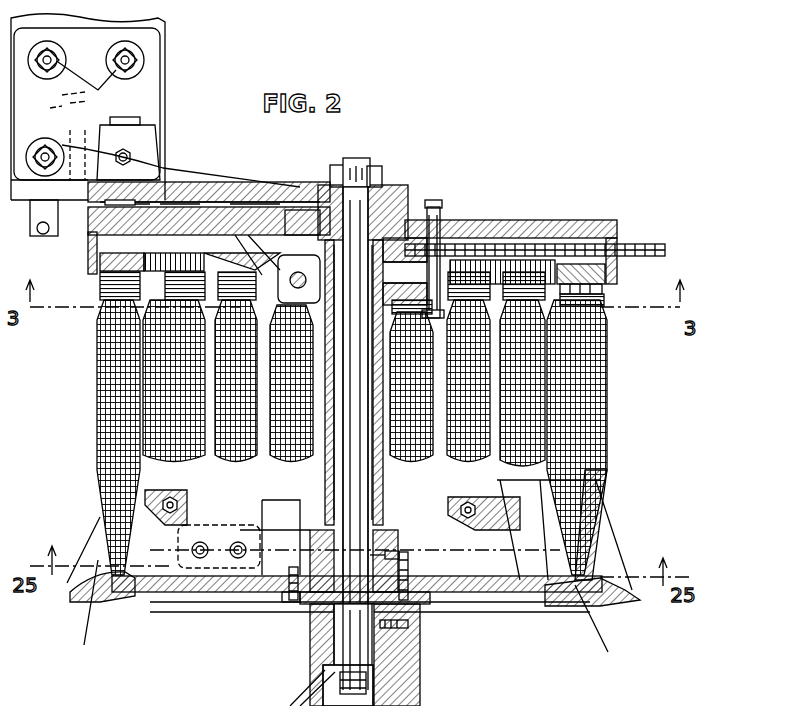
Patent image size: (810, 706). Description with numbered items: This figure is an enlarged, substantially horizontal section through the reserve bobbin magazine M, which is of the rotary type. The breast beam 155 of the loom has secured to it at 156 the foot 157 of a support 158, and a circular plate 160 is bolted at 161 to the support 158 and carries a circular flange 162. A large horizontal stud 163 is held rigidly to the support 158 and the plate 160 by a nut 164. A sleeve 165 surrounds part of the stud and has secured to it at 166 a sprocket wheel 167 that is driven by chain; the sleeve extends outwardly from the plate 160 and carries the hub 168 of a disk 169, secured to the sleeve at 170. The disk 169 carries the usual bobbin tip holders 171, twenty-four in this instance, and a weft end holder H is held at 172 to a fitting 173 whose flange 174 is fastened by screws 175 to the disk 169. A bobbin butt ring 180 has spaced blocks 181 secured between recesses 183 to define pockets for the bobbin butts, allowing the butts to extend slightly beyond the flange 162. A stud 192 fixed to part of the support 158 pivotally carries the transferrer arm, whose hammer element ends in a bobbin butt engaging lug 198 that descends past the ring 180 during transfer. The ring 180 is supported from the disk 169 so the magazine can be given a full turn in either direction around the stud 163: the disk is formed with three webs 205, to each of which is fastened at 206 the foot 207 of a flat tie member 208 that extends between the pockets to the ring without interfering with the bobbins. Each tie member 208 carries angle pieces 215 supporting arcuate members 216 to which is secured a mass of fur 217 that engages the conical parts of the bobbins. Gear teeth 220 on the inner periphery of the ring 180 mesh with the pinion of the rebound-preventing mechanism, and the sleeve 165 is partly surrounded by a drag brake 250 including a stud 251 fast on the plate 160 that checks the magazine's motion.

The breast beam 155 is at (150, 25).
The securing point of foot 156 is at (47, 152).
The foot 157 is at (155, 66).
The support 158 is at (232, 190).
The circular plate 160 is at (306, 208).
The bolting point of plate 161 is at (166, 200).
The circular flange 162 is at (88, 262).
The horizontal stud 163 is at (352, 218).
The nut 164 is at (378, 170).
The sleeve 165 is at (383, 475).
The securing point of sprocket wheel 166 is at (400, 240).
The sprocket wheel 167 is at (325, 184).
The hub 168 is at (320, 532).
The disk 169 is at (478, 592).
The securing point of hub 170 is at (402, 553).
The bobbin tip holders 171 is at (92, 598).
The holding point of weft end holder 172 is at (406, 630).
The fitting 173 is at (318, 640).
The flange 174 is at (283, 596).
The screws 175 is at (292, 604).
The bobbin butt ring 180 is at (612, 262).
The blocks 181 is at (142, 282).
The recesses 183 is at (606, 286).
The stud 192 is at (116, 122).
The bobbin butt engaging lug 198 is at (299, 279).
The webs 205 is at (270, 535).
The fastening point of tie member foot 206 is at (238, 544).
The foot 207 is at (198, 536).
The tie members 208 is at (148, 464).
The angle pieces 215 is at (182, 497).
The arcuate members 216 is at (556, 518).
The mass of fur 217 is at (578, 450).
The gear teeth 220 is at (470, 270).
The drag brake 250 is at (288, 284).
The stud 251 is at (456, 243).
The reserve bobbin magazine M is at (530, 225).
The weft end holder H is at (308, 688).